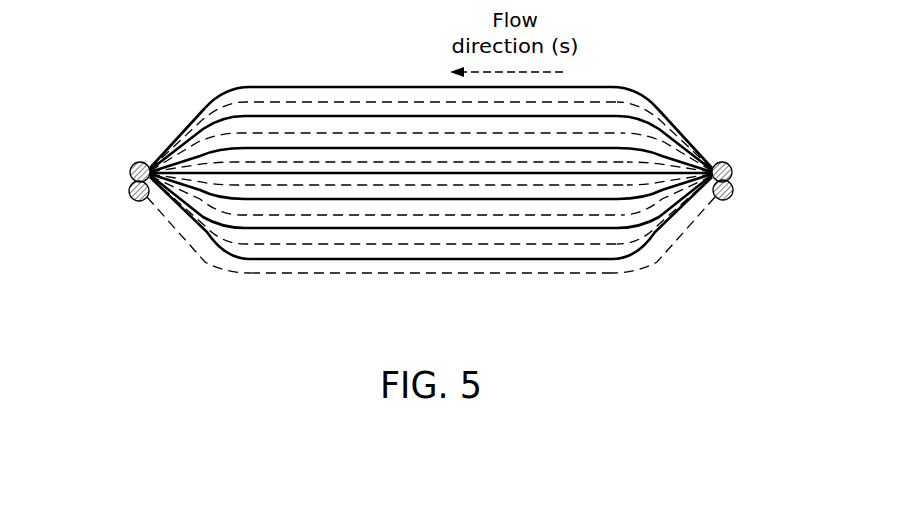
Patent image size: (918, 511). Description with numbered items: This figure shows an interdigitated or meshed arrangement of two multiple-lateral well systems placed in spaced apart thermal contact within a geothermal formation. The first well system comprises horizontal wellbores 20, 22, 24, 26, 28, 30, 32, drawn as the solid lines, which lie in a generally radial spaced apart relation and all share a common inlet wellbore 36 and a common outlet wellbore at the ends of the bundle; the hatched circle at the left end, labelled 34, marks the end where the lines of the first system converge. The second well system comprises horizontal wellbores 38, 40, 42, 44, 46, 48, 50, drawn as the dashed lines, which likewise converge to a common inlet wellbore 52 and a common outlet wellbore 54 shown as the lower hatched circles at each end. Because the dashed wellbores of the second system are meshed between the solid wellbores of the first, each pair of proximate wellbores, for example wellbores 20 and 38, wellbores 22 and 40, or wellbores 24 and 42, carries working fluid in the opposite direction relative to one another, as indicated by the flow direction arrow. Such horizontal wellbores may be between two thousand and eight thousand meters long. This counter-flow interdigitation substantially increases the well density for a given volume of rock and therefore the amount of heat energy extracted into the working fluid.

The horizontal wellbore 20 is at (360, 87).
The horizontal wellbore 22 is at (652, 103).
The horizontal wellbore 24 is at (683, 131).
The horizontal wellbore 26 is at (392, 173).
The horizontal wellbore 28 is at (680, 237).
The horizontal wellbore 30 is at (645, 272).
The horizontal wellbore 32 is at (640, 275).
The left upper manifold 34 is at (130, 172).
The common inlet wellbore 36 is at (732, 172).
The horizontal wellbore 38 is at (205, 104).
The horizontal wellbore 40 is at (195, 118).
The horizontal wellbore 42 is at (262, 103).
The horizontal wellbore 44 is at (276, 245).
The horizontal wellbore 46 is at (302, 215).
The horizontal wellbore 48 is at (368, 246).
The horizontal wellbore 50 is at (215, 267).
The common inlet wellbore 52 is at (129, 191).
The common outlet wellbore 54 is at (733, 191).